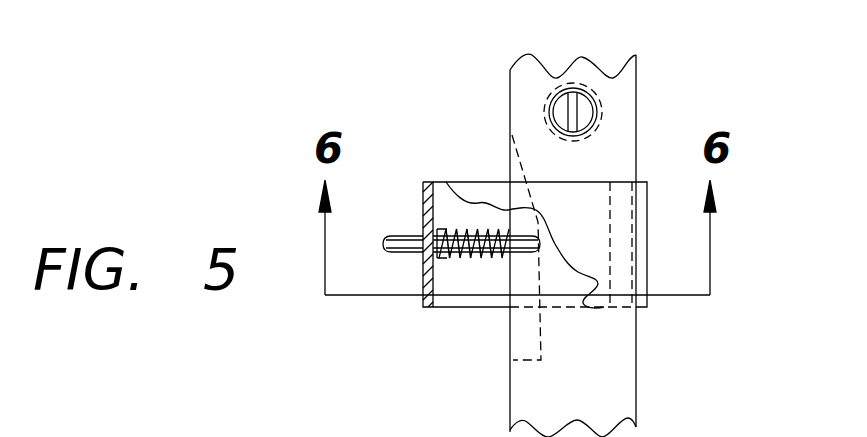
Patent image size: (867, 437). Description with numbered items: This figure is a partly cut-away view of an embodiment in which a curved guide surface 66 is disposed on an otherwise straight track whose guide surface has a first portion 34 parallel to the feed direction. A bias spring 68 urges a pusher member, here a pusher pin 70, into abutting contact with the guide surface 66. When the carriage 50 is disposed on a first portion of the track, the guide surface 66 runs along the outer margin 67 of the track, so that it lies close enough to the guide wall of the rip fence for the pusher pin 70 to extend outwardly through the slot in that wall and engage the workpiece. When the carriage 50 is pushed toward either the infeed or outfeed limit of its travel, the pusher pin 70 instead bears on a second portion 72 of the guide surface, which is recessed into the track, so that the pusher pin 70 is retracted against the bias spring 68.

The first portion of guide surface 34 is at (627, 87).
The carriage 50 is at (623, 219).
The curved guide surface 66 is at (502, 326).
The outer margin of the track 67 is at (510, 95).
The bias spring 68 is at (450, 227).
The pusher pin 70 is at (383, 246).
The second portion of guide surface 72 is at (541, 343).